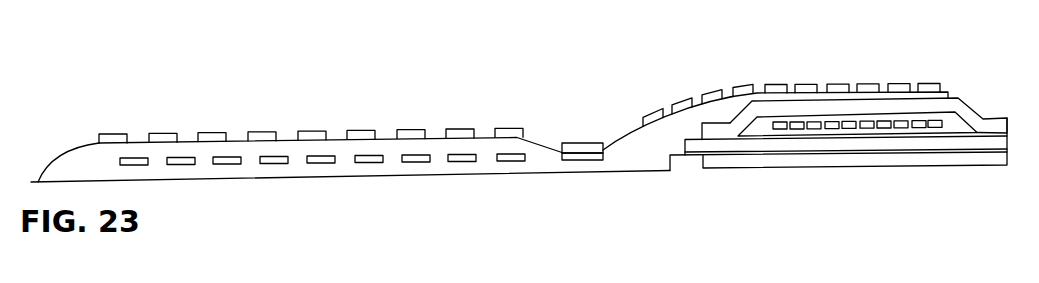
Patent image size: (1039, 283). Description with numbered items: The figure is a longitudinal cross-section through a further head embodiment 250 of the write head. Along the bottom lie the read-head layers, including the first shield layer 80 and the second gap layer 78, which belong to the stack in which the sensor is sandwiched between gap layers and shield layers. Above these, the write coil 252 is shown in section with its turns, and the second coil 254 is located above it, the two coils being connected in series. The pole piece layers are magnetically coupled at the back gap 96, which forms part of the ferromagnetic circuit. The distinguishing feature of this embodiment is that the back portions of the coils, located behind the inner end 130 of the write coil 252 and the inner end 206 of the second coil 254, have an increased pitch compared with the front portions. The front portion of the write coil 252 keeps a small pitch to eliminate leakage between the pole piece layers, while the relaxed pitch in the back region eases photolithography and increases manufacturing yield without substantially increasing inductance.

The head embodiment 250 is at (537, 88).
The second coil 254 is at (262, 131).
The write coil 252 is at (373, 165).
The inner end of second coil 206 is at (590, 143).
The inner end of write coil 130 is at (585, 160).
The back gap 96 is at (712, 122).
The second gap layer 78 is at (900, 105).
The first shield layer 80 is at (782, 168).